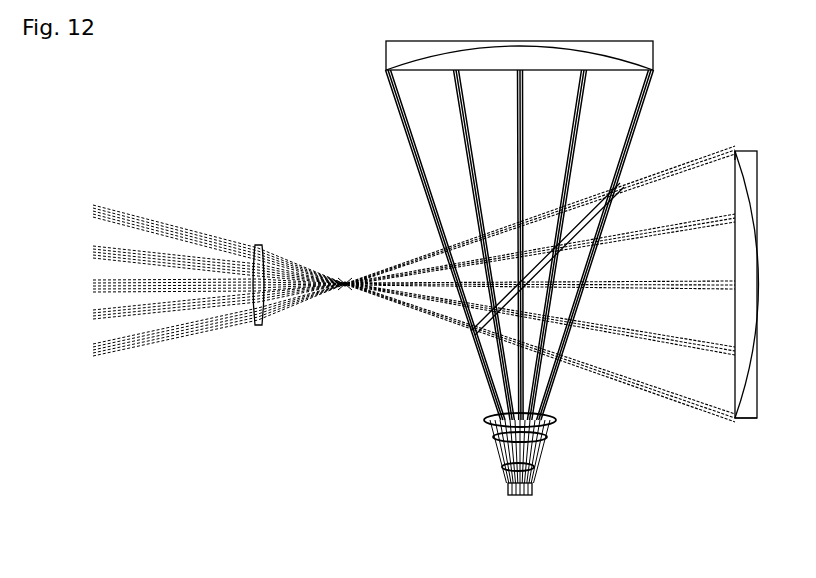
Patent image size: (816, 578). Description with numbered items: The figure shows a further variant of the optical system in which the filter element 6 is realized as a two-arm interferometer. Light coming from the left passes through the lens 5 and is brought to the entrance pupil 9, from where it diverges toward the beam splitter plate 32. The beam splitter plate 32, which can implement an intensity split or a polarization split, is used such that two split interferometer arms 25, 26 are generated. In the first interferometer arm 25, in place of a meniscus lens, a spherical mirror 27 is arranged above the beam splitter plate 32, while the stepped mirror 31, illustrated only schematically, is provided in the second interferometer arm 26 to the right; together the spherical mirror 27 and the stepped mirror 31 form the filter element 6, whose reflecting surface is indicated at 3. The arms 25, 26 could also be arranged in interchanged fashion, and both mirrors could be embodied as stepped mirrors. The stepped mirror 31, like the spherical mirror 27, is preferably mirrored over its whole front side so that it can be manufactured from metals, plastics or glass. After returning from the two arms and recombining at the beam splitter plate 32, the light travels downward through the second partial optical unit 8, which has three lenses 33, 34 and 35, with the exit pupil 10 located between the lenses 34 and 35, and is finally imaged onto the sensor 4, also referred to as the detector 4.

The imaging optical unit 3 is at (733, 147).
The sensor 4 is at (520, 495).
The lens 5 is at (260, 245).
The filter element 6 is at (738, 276).
The second partial optical unit 8 is at (515, 450).
The entrance pupil 9 is at (346, 300).
The exit pupil 10 is at (530, 457).
The first interferometer arm 25 is at (408, 131).
The second interferometer arm 26 is at (665, 395).
The spherical mirror 27 is at (653, 57).
The stepped mirror 31 is at (743, 420).
The beam splitter plate 32 is at (600, 182).
The first lens 33 is at (557, 421).
The second lens 34 is at (500, 437).
The third lens 35 is at (503, 465).